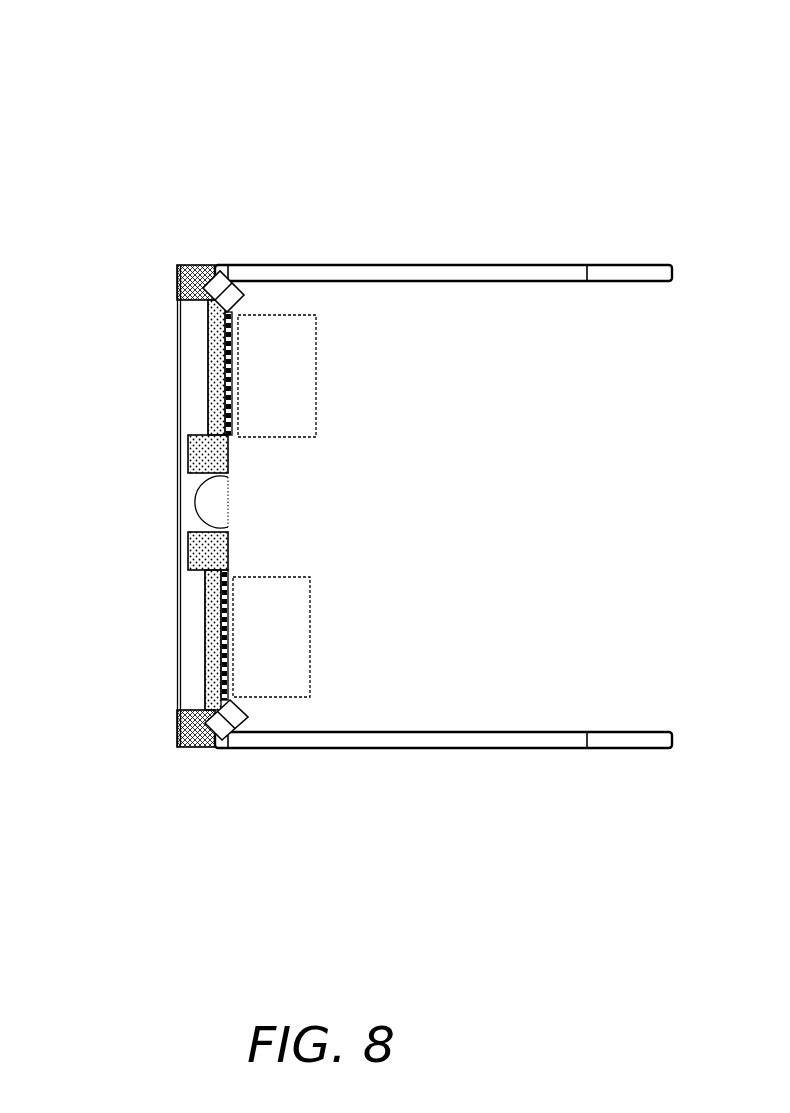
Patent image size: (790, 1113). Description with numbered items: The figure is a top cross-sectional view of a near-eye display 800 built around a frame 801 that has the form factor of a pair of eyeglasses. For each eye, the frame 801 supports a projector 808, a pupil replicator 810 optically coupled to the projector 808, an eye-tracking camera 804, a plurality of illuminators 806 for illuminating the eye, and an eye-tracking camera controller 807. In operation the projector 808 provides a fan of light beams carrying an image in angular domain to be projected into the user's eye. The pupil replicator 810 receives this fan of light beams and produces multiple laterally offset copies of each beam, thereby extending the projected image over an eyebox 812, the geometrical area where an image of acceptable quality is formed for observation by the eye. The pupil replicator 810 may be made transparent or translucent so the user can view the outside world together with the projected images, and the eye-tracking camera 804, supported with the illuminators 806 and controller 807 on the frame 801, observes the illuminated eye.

The near-eye display 800 is at (408, 108).
The frame 801 is at (552, 265).
The eye-tracking camera 804 is at (222, 265).
The illuminators 806 is at (225, 357).
The eye-tracking camera controller 807 is at (177, 283).
The projector 808 is at (188, 455).
The pupil replicator 810 is at (208, 407).
The eyebox 812 is at (288, 384).